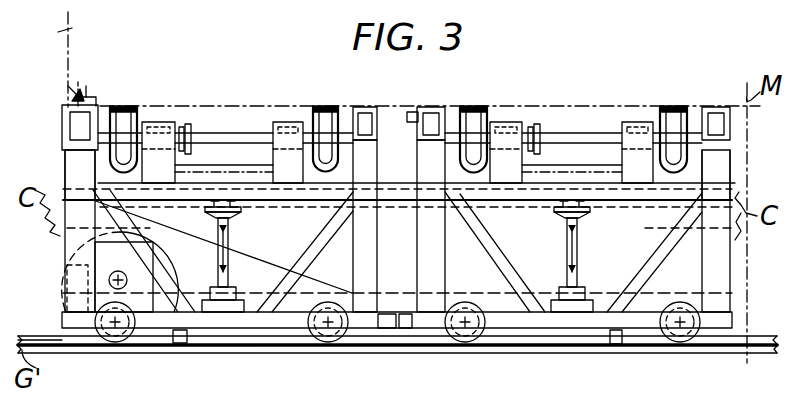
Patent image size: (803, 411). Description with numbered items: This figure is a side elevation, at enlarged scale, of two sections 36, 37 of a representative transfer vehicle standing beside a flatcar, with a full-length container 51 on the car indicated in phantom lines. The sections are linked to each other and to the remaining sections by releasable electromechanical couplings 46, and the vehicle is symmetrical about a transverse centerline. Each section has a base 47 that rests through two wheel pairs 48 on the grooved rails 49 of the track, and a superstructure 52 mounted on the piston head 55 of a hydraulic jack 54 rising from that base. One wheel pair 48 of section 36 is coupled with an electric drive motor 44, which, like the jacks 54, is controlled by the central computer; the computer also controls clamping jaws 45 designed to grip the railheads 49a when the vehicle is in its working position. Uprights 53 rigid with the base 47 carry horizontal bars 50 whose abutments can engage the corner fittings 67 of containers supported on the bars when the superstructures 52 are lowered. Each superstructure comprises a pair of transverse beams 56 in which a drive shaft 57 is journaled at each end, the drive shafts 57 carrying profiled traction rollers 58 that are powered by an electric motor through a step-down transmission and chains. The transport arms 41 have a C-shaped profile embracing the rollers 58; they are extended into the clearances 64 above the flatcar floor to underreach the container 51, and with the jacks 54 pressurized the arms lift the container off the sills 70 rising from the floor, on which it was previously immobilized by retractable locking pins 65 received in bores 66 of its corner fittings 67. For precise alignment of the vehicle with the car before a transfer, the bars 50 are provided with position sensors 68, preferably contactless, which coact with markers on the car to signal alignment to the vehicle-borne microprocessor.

The section 36 is at (258, 62).
The section 37 is at (565, 78).
The transport arm 41 is at (130, 108).
The electric drive motor 44 is at (128, 217).
The clamping jaw 45 is at (180, 344).
The releasable electromechanical coupling 46 is at (395, 330).
The base 47 is at (63, 285).
The wheel pair 48 is at (117, 340).
The grooved rail 49 is at (407, 348).
The railhead 49a is at (50, 337).
The horizontal bar 50 is at (86, 126).
The full-length container 51 is at (70, 30).
The superstructure 52 is at (243, 162).
The upright 53 is at (440, 275).
The hydraulic jack 54 is at (209, 284).
The piston head 55 is at (242, 213).
The transverse beam 56 is at (166, 190).
The drive shaft 57 is at (229, 142).
The traction roller 58 is at (150, 116).
The clearance 64 is at (96, 150).
The retractable locking pin 65 is at (80, 95).
The bore 66 is at (72, 90).
The corner fitting 67 is at (57, 33).
The position sensor 68 is at (413, 118).
The sill 70 is at (66, 108).